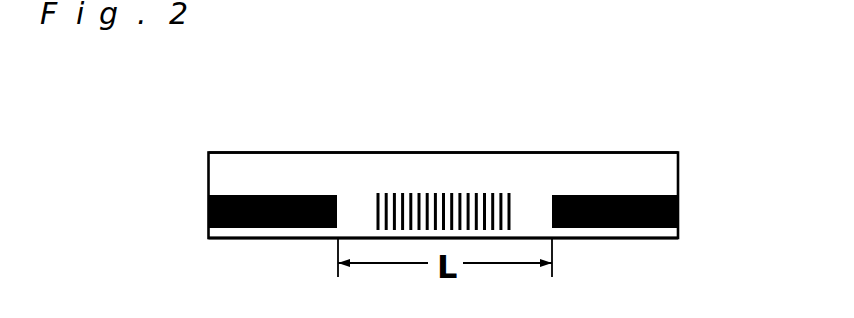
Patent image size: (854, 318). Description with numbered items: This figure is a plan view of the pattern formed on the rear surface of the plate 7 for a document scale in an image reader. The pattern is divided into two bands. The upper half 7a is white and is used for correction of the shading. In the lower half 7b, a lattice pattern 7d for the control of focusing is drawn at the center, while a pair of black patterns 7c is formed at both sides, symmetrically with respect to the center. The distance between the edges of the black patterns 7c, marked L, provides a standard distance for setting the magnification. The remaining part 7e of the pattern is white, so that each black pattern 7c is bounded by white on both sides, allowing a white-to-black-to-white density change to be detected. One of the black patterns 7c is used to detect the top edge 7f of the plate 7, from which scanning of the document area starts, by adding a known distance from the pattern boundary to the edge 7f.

The plate 7 is at (622, 152).
The upper half of the pattern 7a is at (692, 152).
The lower half of the pattern 7b is at (692, 195).
The black patterns 7c is at (270, 195).
The lattice pattern 7d is at (438, 184).
The remaining part 7e is at (355, 215).
The top edge of the plate 7f is at (640, 238).